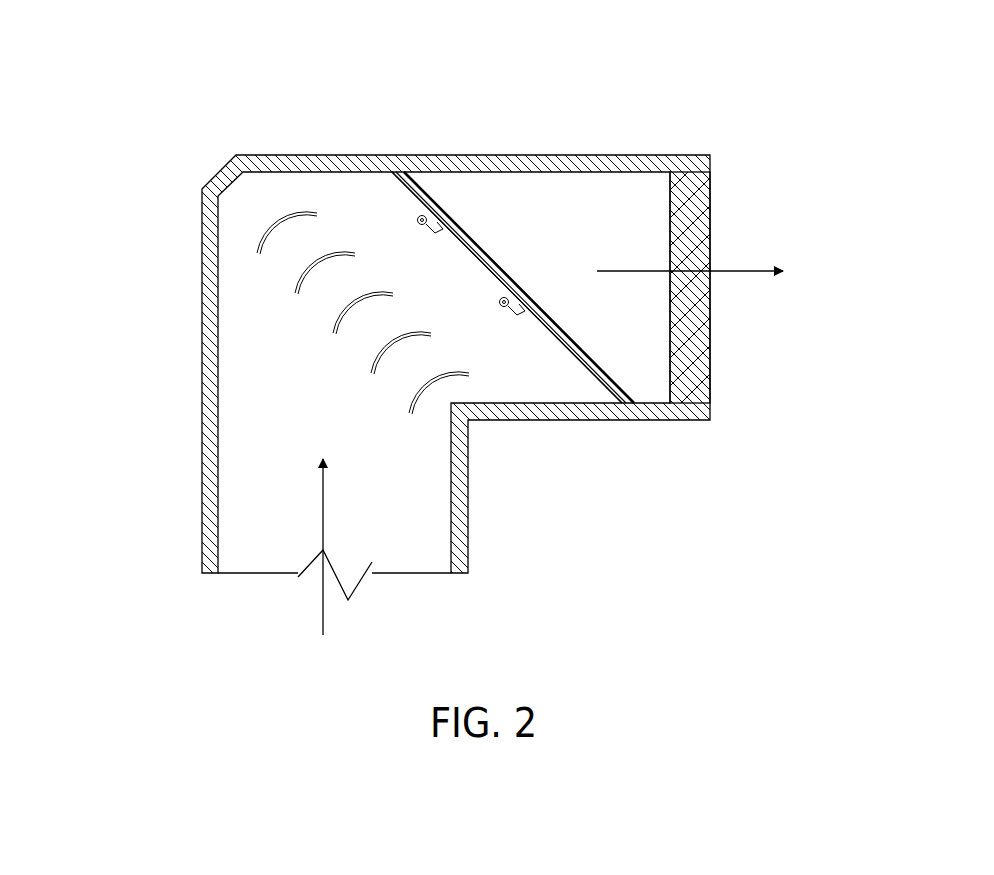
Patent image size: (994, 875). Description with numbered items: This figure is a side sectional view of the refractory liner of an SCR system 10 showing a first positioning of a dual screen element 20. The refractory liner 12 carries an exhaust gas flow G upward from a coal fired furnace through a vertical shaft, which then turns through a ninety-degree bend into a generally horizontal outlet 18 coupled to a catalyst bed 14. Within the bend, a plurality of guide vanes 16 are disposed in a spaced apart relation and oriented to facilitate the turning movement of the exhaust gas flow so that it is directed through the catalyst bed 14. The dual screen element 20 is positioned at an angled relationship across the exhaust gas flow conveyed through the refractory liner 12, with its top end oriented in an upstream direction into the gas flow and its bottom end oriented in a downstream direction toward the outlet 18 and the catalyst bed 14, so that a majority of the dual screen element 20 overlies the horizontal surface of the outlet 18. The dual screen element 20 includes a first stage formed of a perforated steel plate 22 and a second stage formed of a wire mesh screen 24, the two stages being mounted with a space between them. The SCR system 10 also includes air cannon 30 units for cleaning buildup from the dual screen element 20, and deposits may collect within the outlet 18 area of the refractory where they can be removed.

The SCR system 10 is at (147, 118).
The refractory liner 12 is at (200, 337).
The catalyst bed 14 is at (695, 197).
The guide vanes 16 is at (293, 287).
The outlet 18 is at (644, 192).
The dual screen element 20 is at (402, 174).
The perforated steel plate 22 is at (590, 378).
The wire mesh screen 24 is at (488, 247).
The air cannon 30 is at (417, 215).